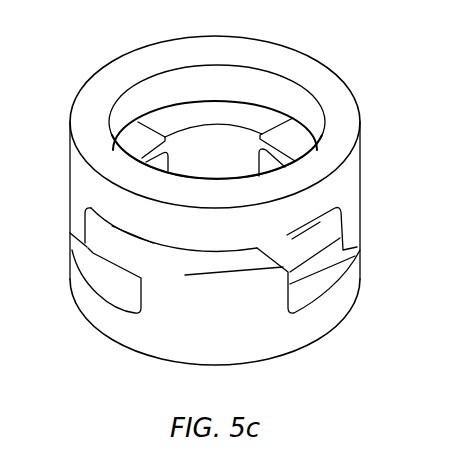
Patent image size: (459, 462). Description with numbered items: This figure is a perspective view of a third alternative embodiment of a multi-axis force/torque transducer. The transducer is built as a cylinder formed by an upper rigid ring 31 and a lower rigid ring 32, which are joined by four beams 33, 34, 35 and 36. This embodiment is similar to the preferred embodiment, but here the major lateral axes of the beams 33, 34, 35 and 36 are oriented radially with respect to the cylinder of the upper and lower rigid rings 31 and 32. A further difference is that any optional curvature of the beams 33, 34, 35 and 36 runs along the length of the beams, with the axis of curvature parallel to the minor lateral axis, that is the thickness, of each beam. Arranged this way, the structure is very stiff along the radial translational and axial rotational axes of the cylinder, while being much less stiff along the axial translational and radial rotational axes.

The upper rigid ring 31 is at (160, 60).
The lower rigid ring 32 is at (238, 353).
The beam 33 is at (137, 140).
The beam 34 is at (312, 245).
The beam 35 is at (290, 137).
The beam 36 is at (130, 246).